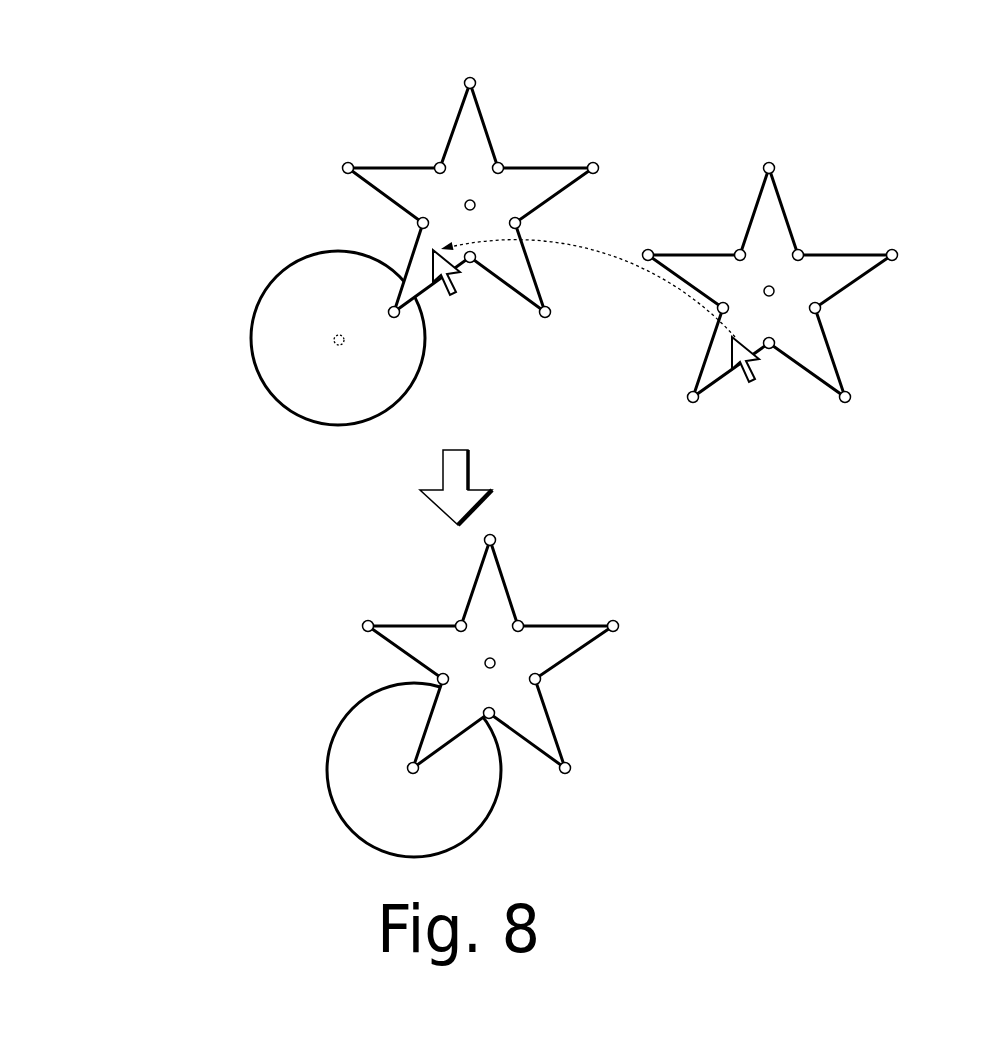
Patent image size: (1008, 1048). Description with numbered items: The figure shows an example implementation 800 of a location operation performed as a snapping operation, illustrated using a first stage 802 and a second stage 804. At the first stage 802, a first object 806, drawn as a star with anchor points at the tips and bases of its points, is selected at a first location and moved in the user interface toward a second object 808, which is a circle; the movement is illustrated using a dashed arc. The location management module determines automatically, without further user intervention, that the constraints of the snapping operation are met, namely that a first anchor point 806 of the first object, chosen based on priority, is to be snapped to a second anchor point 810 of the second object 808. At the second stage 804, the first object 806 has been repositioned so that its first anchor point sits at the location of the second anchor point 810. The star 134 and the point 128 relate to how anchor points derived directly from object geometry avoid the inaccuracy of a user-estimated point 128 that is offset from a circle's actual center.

The example implementation 800 is at (150, 68).
The first stage 802 is at (289, 132).
The second stage 804 is at (289, 575).
The first object 806 is at (486, 124).
The second object 808 is at (272, 281).
The second anchor point 810 is at (335, 334).
The star 134 is at (505, 582).
The point 128 is at (367, 846).